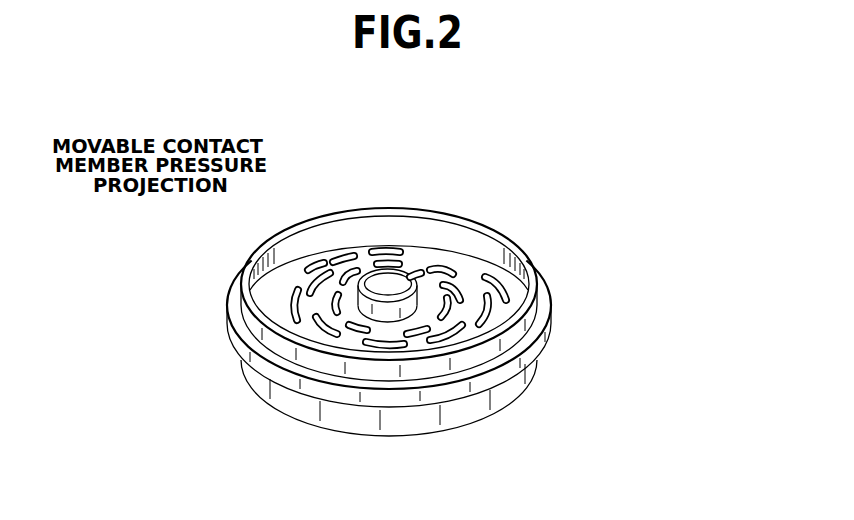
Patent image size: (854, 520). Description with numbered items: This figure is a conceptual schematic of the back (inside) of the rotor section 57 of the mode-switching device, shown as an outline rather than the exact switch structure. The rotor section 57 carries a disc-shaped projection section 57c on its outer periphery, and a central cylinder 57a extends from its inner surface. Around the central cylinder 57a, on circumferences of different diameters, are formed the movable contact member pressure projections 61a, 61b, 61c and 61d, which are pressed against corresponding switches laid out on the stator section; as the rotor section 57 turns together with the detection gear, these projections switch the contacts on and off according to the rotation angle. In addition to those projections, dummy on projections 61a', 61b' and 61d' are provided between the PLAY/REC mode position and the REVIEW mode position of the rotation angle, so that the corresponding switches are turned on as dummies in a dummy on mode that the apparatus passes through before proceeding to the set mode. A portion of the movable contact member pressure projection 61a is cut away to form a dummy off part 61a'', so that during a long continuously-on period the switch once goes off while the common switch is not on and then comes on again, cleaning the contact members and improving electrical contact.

The rotor section 57 is at (583, 286).
The central cylinder 57a is at (394, 283).
The disc-shaped projection section 57c is at (507, 372).
The movable contact member pressure projection 61a is at (314, 203).
The dummy on projection 61a' is at (542, 178).
The dummy off part 61a'' is at (180, 268).
The movable contact member pressure projection 61b is at (225, 341).
The dummy on projection 61b' is at (443, 202).
The movable contact member pressure projection 61c is at (457, 288).
The movable contact member pressure projection 61d is at (326, 401).
The dummy on projection 61d' is at (359, 195).